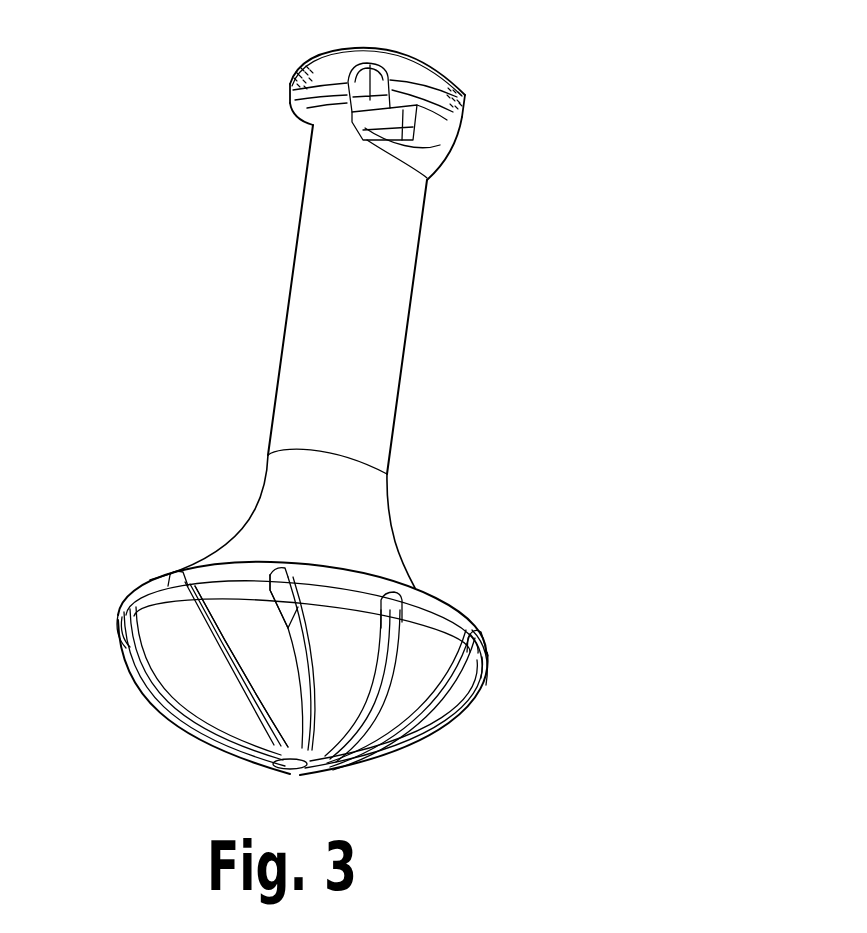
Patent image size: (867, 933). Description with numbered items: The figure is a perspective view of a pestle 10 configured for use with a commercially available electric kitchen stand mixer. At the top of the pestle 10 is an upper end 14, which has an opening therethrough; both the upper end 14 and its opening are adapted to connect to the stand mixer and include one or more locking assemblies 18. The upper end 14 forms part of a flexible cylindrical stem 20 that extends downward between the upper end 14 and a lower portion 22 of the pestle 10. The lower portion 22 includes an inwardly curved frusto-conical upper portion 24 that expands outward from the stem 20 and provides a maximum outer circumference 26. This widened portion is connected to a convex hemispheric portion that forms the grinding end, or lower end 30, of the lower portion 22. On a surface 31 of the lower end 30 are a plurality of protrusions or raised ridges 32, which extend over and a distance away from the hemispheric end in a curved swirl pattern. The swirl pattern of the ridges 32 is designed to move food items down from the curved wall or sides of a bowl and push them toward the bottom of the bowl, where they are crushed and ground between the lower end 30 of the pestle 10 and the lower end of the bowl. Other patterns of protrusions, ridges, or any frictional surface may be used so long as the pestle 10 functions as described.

The pestle 10 is at (203, 187).
The upper end 14 is at (440, 80).
The locking assembly 18 is at (437, 147).
The flexible cylindrical stem 20 is at (395, 315).
The lower portion 22 is at (380, 542).
The inwardly curved frusto-conical upper portion 24 is at (262, 513).
The maximum outer circumference 26 is at (468, 622).
The lower end 30 is at (162, 630).
The surface 31 is at (357, 667).
The raised ridges 32 is at (180, 667).